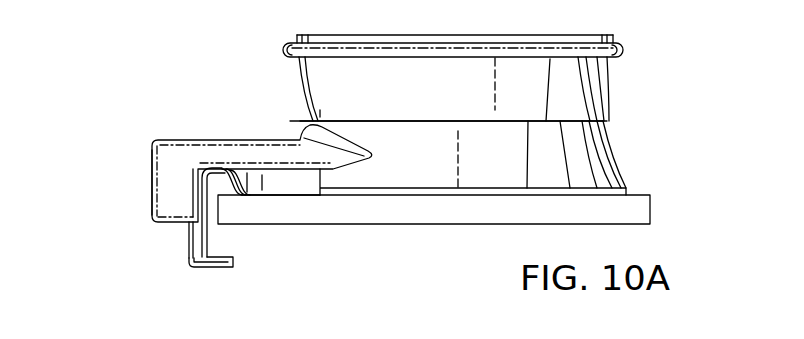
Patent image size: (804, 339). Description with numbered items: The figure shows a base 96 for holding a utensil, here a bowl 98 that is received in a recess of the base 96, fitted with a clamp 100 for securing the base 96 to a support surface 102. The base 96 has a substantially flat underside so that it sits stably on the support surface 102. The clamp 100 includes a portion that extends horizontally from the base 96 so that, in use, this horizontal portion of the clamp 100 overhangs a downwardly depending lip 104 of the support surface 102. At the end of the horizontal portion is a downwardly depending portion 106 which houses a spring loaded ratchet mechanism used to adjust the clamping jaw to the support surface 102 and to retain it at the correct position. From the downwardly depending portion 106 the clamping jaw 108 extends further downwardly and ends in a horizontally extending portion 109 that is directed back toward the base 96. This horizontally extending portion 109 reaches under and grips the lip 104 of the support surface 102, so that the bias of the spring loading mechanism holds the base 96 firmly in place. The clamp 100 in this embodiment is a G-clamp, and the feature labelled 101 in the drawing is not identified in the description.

The bowl 98 is at (607, 77).
The base 96 is at (615, 152).
The support surface 102 is at (434, 219).
The clamp 100 is at (152, 136).
The hood 101 is at (213, 140).
The downwardly depending portion 106 is at (150, 184).
The lip 104 is at (218, 238).
The clamping jaw 108 is at (188, 240).
The horizontally extending portion 109 is at (212, 270).